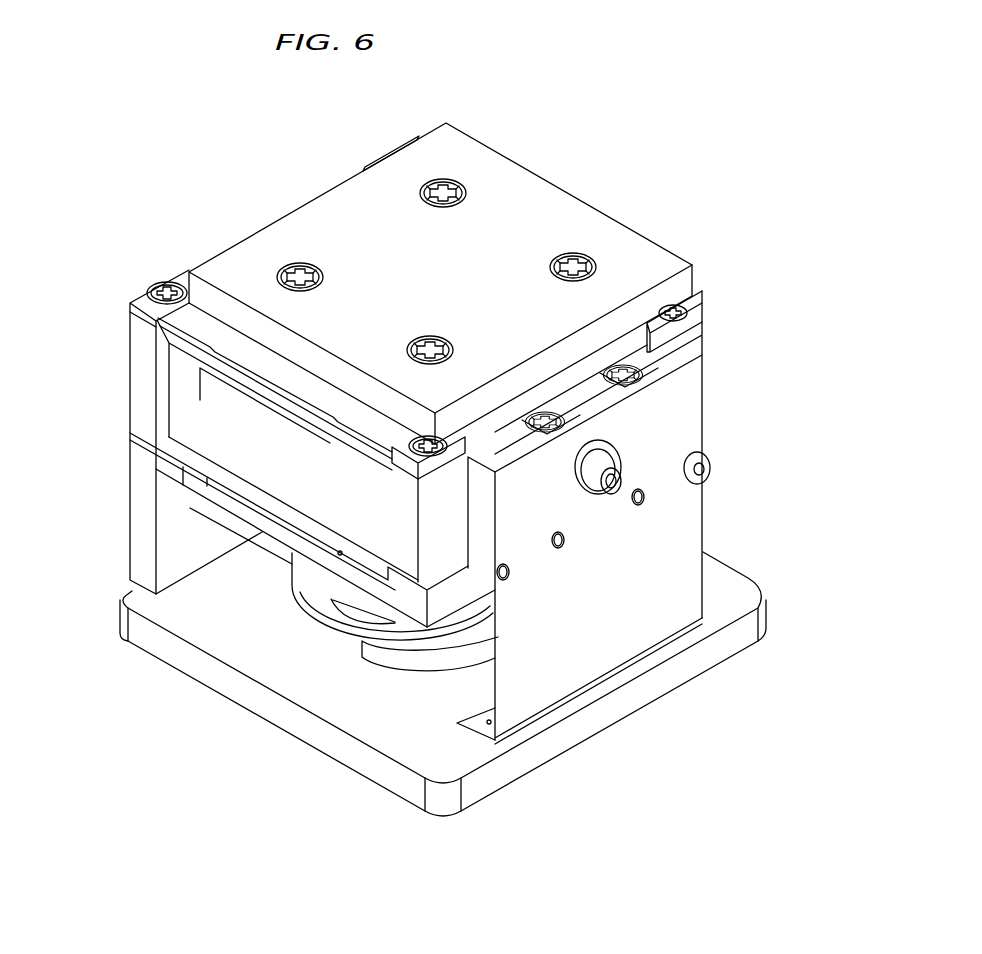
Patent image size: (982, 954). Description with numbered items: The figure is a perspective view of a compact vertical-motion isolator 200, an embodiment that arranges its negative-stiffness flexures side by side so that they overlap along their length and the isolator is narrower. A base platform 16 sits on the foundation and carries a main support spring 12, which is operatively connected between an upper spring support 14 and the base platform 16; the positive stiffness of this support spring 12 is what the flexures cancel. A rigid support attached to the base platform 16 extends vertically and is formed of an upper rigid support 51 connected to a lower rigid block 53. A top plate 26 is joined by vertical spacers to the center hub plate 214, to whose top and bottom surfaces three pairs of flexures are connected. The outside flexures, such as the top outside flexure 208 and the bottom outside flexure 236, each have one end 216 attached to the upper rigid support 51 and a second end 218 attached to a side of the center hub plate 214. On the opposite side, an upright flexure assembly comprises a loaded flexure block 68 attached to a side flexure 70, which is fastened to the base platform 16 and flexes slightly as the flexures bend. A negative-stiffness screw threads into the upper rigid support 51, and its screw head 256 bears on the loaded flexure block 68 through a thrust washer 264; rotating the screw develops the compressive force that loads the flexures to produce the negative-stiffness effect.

The compact vertical-motion isolator 200 is at (560, 150).
The top plate 26 is at (335, 222).
The end of outside flexure 216 is at (147, 300).
The second end of outside flexure 218 is at (407, 466).
The upper rigid support 51 is at (128, 372).
The lower rigid block 53 is at (143, 533).
The center hub plate 214 is at (200, 380).
The outside flexure 208 is at (298, 382).
The loaded flexure block 68 is at (678, 418).
The side flexure 70 is at (668, 538).
The thrust washer 264 is at (583, 472).
The screw head 256 is at (594, 483).
The outside flexure 236 is at (273, 515).
The main support spring 12 is at (333, 603).
The upper spring support 14 is at (450, 602).
The base platform 16 is at (204, 601).